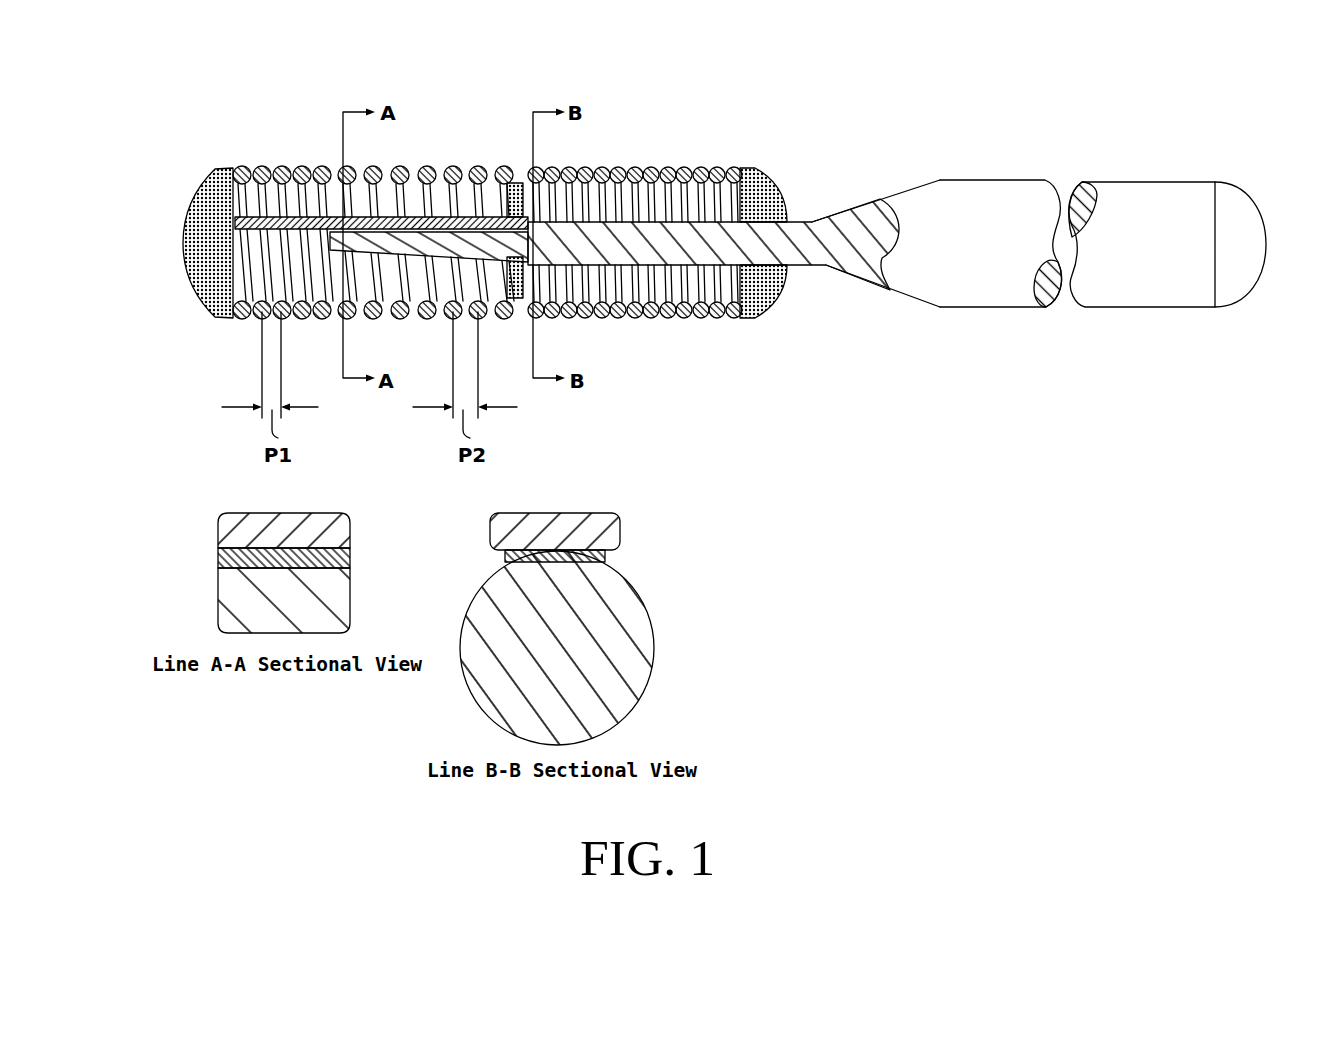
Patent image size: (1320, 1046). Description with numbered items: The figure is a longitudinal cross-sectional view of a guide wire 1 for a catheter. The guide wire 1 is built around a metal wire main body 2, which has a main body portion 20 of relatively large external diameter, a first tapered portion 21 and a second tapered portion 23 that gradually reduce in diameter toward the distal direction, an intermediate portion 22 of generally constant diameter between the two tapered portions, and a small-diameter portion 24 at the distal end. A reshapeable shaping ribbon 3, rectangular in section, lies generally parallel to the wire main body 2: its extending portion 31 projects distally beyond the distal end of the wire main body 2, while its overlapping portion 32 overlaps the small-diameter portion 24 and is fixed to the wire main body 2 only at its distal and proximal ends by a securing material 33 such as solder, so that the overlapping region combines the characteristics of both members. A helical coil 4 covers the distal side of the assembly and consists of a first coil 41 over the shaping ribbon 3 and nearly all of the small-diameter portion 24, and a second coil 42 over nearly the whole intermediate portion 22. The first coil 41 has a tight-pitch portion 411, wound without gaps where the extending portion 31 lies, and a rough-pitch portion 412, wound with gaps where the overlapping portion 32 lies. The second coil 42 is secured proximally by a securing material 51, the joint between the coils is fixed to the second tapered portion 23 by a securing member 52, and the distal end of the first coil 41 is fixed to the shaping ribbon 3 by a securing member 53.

The guide wire 1 is at (707, 384).
The wire main body 2 is at (742, 462).
The main body portion 20 is at (1145, 292).
The first tapered portion 21 is at (862, 248).
The intermediate portion 22 is at (727, 247).
The second tapered portion 23 is at (563, 243).
The small-diameter portion 24 is at (423, 317).
The shaping ribbon 3 is at (416, 373).
The extending portion 31 is at (305, 318).
The overlapping portion 32 is at (373, 328).
The securing material 33 is at (303, 215).
The helical coil 4 is at (487, 213).
The first coil 41 is at (373, 171).
The tight-pitch portion 411 is at (233, 157).
The rough-pitch portion 412 is at (426, 191).
The second coil 42 is at (645, 167).
The securing material 51 is at (767, 290).
The securing member 52 is at (503, 320).
The securing member 53 is at (215, 283).